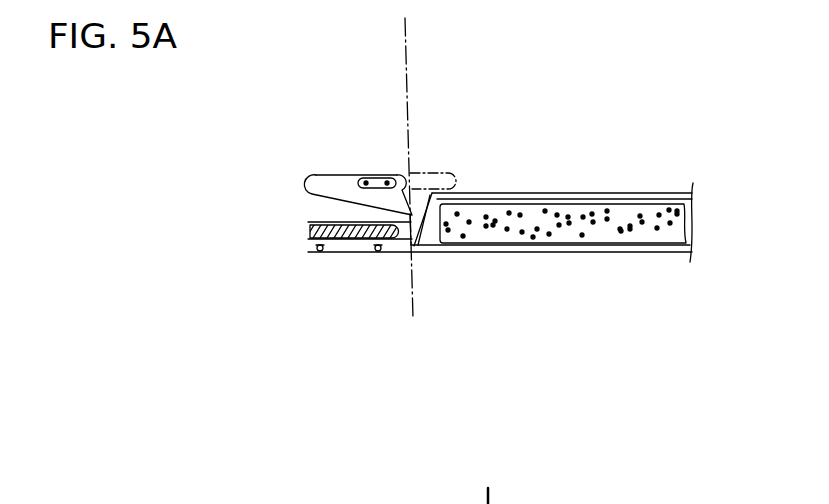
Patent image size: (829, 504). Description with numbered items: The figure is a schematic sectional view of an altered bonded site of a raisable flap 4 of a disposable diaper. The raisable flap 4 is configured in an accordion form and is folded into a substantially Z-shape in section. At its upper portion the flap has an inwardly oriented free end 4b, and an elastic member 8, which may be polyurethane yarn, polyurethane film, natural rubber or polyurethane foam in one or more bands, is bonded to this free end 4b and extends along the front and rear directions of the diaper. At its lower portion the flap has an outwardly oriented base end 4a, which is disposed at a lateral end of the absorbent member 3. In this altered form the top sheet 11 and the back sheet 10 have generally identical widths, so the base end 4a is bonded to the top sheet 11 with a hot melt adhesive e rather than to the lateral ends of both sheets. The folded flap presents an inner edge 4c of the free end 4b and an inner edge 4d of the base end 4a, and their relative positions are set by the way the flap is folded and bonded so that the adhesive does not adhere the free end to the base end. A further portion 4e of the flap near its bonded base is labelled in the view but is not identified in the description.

The absorbent member 3 is at (673, 253).
The raisable flap 4 is at (306, 184).
The base end 4a is at (336, 222).
The free end 4b is at (377, 177).
The inner edge of the free end 4c is at (403, 176).
The inner edge of the base end 4d is at (426, 255).
The lower member 4e is at (402, 253).
The elastic member 8 is at (360, 174).
The hot melt adhesive e is at (308, 230).
The back sheet 10 is at (549, 253).
The top sheet 11 is at (605, 192).